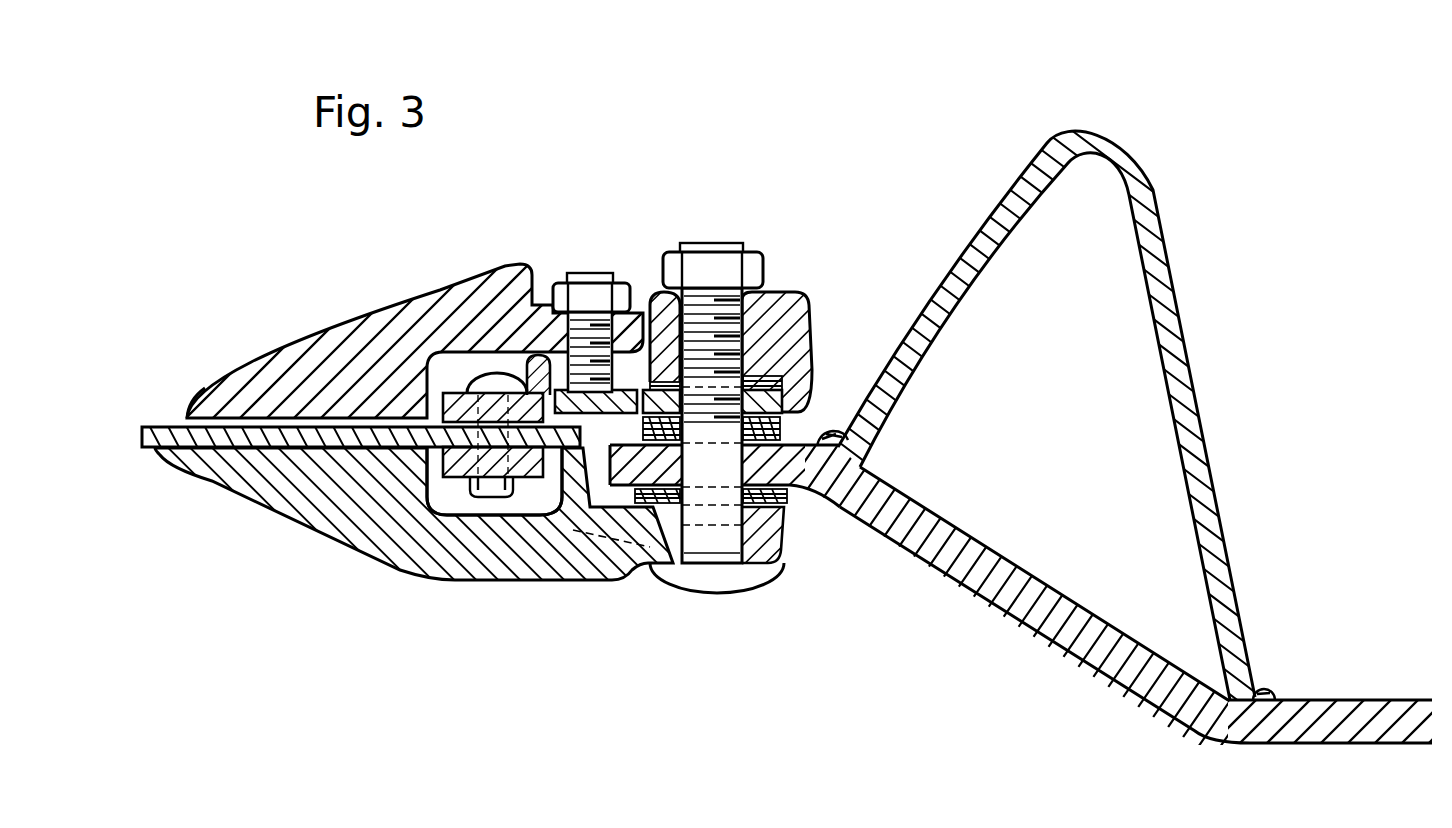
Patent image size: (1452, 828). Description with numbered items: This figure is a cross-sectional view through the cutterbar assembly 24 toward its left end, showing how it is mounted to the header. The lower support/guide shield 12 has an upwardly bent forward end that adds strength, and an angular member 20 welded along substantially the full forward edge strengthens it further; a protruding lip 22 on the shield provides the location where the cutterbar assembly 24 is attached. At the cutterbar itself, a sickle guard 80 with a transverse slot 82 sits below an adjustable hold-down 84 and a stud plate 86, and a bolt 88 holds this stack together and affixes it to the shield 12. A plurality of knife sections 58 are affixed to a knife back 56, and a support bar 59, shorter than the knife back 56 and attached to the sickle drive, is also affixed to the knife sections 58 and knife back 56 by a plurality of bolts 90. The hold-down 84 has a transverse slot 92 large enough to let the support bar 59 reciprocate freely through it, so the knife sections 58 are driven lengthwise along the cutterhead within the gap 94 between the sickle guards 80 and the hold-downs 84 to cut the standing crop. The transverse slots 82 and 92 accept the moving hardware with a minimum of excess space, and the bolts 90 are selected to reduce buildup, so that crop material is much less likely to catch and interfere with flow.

The lower support/guide shield 12 is at (1013, 595).
The angular member 20 is at (1168, 332).
The protruding lip 22 is at (770, 467).
The cutterbar assembly 24 is at (862, 242).
The knife back 56 is at (540, 490).
The knife sections 58 is at (150, 449).
The support bar 59 is at (526, 362).
The sickle guard 80 is at (520, 580).
The transverse slot 82 is at (427, 512).
The adjustable hold-down 84 is at (428, 300).
The stud plate 86 is at (633, 390).
The bolt 88 is at (713, 243).
The bolts 90 is at (485, 493).
The transverse slot 92 is at (442, 360).
The gap 94 is at (166, 412).